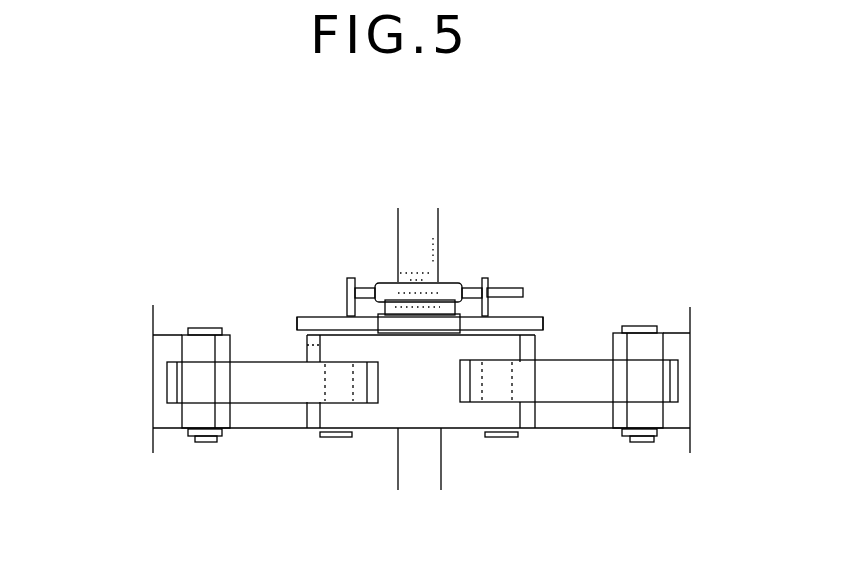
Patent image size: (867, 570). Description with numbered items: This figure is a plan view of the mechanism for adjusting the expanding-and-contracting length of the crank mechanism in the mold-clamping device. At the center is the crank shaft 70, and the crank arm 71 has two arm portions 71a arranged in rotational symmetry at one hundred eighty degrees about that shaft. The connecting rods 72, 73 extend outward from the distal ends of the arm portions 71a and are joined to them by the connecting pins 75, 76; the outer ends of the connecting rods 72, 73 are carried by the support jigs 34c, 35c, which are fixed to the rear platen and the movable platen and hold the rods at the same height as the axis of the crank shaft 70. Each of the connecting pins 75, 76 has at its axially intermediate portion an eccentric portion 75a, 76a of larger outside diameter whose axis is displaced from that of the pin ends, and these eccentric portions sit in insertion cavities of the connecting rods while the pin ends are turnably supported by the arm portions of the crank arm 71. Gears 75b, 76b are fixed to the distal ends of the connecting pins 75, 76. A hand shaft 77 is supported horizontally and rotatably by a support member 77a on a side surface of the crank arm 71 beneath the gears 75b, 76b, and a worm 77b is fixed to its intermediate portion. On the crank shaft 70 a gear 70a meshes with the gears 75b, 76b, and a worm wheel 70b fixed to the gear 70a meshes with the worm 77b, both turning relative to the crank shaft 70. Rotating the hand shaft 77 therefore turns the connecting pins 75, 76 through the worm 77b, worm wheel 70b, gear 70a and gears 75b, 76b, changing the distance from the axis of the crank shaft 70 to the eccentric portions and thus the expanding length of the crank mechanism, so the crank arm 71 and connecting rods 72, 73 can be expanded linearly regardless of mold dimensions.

The support jig 34c is at (676, 420).
The support jig 35c is at (165, 417).
The crank shaft 70 is at (442, 450).
The gear 70a is at (460, 280).
The worm wheel 70b is at (380, 282).
The crank arm 71 is at (410, 405).
The arm portion 71a is at (305, 432).
The connecting rod 72 is at (257, 375).
The connecting rod 73 is at (572, 370).
The connecting pin 75 is at (333, 440).
The eccentric portion 75a is at (303, 352).
The gear 75b is at (297, 312).
The connecting pin 76 is at (507, 440).
The eccentric portion 76a is at (510, 377).
The gear 76b is at (547, 306).
The hand shaft 77 is at (525, 278).
The support member 77a is at (345, 273).
The worm gear 77b is at (423, 267).